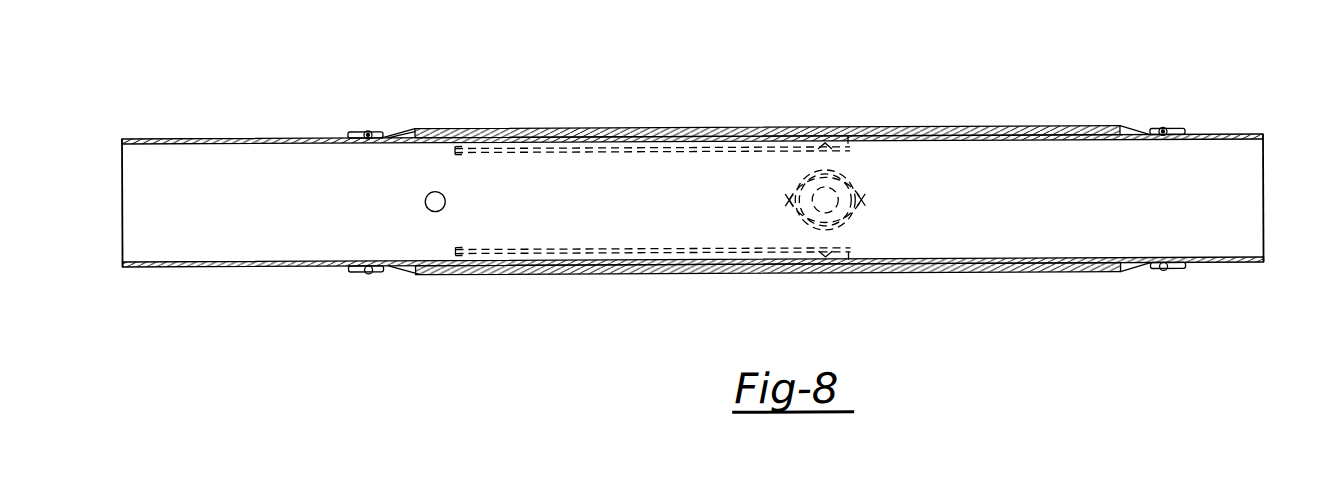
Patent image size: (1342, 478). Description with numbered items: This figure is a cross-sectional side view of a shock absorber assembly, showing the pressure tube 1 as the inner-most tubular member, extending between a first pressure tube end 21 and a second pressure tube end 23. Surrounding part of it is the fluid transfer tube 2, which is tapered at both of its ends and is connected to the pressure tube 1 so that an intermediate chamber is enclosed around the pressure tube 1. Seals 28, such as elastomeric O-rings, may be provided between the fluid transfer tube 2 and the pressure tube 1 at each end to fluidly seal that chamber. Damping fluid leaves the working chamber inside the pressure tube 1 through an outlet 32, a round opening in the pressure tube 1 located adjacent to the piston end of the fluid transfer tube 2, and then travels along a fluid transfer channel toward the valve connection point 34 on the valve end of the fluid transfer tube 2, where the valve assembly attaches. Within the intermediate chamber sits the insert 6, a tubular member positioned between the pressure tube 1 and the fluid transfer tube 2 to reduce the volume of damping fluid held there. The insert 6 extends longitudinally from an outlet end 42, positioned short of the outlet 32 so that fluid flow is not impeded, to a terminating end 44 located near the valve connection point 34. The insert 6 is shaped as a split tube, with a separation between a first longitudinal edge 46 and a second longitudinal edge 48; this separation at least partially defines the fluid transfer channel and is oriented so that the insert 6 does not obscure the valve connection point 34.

The pressure tube 1 is at (212, 139).
The fluid transfer tube 2 is at (423, 130).
The insert 6 is at (620, 272).
The first pressure tube end 21 is at (122, 140).
The second pressure tube end 23 is at (1263, 140).
The seals 28 is at (368, 132).
The outlet 32 is at (445, 203).
The valve connection point 34 is at (862, 203).
The outlet end 42 is at (478, 148).
The terminating end 44 is at (862, 258).
The first longitudinal edge 46 is at (701, 152).
The second longitudinal edge 48 is at (465, 257).